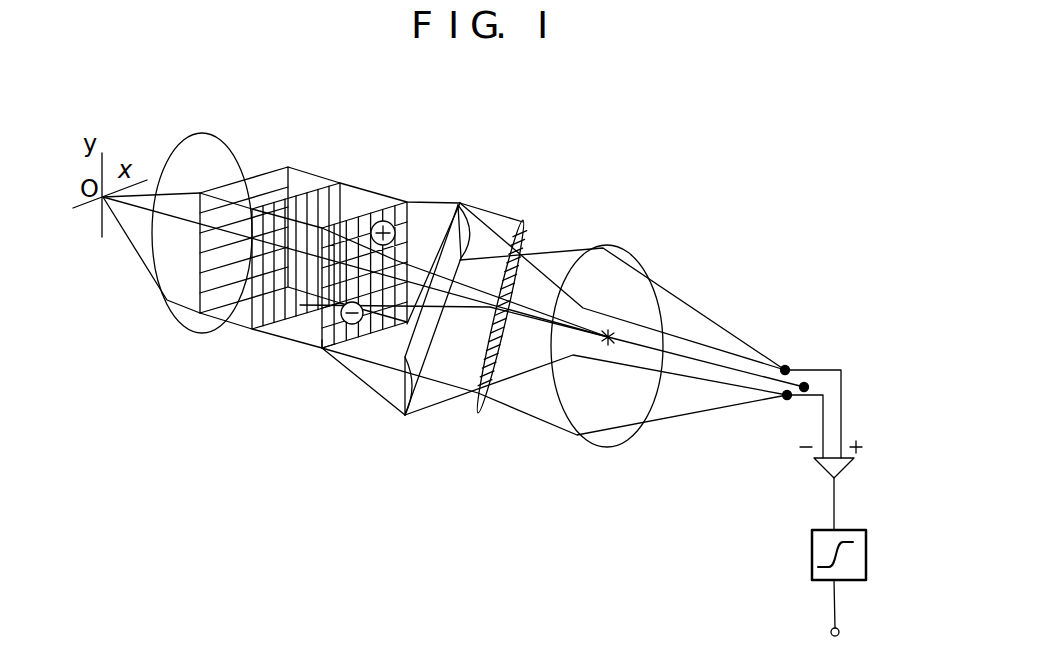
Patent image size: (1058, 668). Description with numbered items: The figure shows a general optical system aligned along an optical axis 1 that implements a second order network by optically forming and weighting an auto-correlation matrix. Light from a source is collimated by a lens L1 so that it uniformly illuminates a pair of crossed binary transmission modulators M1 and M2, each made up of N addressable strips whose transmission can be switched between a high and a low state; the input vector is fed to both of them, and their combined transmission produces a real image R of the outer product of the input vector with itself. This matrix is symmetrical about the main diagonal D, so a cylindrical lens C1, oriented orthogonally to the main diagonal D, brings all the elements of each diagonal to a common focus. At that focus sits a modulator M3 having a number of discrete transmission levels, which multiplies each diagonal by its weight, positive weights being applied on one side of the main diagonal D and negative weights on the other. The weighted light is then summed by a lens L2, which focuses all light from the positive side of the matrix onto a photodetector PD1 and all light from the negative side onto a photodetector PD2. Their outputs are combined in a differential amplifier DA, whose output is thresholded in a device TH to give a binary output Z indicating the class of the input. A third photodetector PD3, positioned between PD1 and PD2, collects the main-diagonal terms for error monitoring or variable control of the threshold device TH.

The optical axis 1 is at (177, 227).
The lens L1 is at (207, 133).
The binary transmission modulator M1 is at (263, 172).
The binary transmission modulator M2 is at (322, 182).
The real image R is at (393, 197).
The main diagonal D is at (330, 350).
The cylindrical lens C1 is at (460, 203).
The modulator M3 is at (528, 237).
The lens L2 is at (647, 265).
The photodetector PD1 is at (786, 366).
The photodetector PD2 is at (786, 398).
The third photodetector PD3 is at (807, 384).
The differential amplifier DA is at (843, 468).
The threshold device TH is at (812, 555).
The binary output Z is at (847, 634).